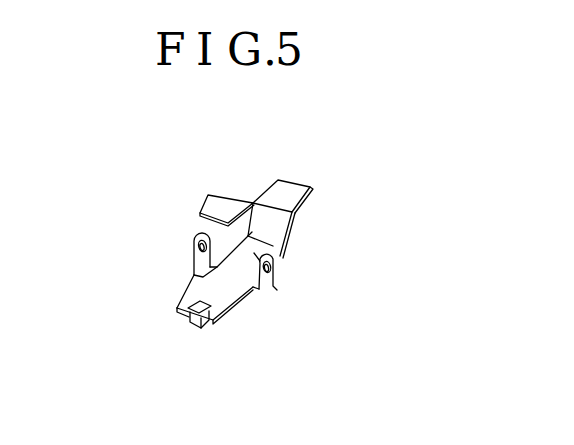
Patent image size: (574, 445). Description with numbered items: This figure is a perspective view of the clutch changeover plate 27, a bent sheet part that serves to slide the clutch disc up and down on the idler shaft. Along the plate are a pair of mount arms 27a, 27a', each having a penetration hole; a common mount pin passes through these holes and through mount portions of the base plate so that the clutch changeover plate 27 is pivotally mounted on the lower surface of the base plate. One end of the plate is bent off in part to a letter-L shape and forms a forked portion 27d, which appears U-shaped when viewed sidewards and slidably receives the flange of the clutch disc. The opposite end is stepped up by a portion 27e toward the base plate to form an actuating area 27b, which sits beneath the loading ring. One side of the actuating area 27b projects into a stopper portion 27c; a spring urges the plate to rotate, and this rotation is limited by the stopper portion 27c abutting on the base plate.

The clutch changeover plate 27 is at (233, 293).
The mount arm 27a is at (168, 254).
The mount arm 27a' is at (304, 279).
The actuating area 27b is at (287, 191).
The stopper portion 27c is at (220, 203).
The forked portion 27d is at (184, 318).
The stepped-up portion 27e is at (277, 228).